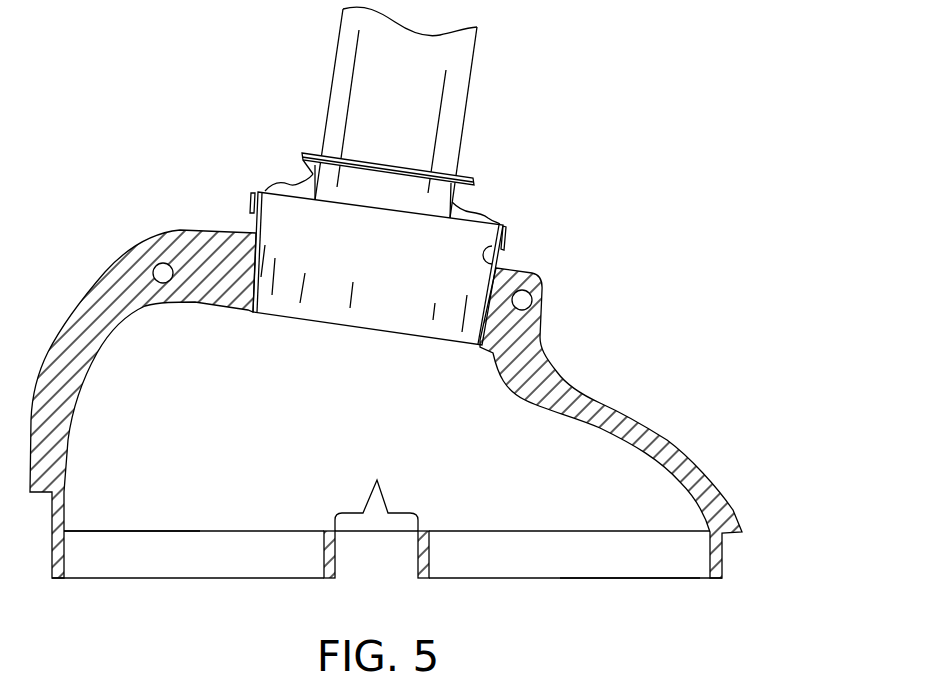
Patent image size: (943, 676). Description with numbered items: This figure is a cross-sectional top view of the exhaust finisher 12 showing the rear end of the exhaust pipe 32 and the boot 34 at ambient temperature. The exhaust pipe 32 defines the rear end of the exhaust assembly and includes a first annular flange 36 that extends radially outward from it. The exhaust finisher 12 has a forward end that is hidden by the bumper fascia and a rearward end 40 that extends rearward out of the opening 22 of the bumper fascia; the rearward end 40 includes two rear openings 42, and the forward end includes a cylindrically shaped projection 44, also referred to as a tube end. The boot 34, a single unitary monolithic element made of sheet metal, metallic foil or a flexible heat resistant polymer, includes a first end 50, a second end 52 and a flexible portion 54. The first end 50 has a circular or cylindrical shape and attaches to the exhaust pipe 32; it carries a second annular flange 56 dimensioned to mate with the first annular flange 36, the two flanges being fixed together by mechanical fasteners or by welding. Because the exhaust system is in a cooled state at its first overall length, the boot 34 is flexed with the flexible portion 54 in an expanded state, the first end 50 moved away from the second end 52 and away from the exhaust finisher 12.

The exhaust finisher 12 is at (565, 361).
The opening 22 is at (502, 266).
The exhaust pipe 32 is at (476, 63).
The boot 34 is at (488, 204).
The first annular flange 36 is at (465, 173).
The rearward end 40 is at (425, 557).
The rear openings 42 is at (187, 557).
The cylindrically shaped projection 44 is at (254, 227).
The first end 50 is at (313, 173).
The second end 52 is at (255, 202).
The flexible portion 54 is at (283, 182).
The second annular flange 56 is at (367, 186).